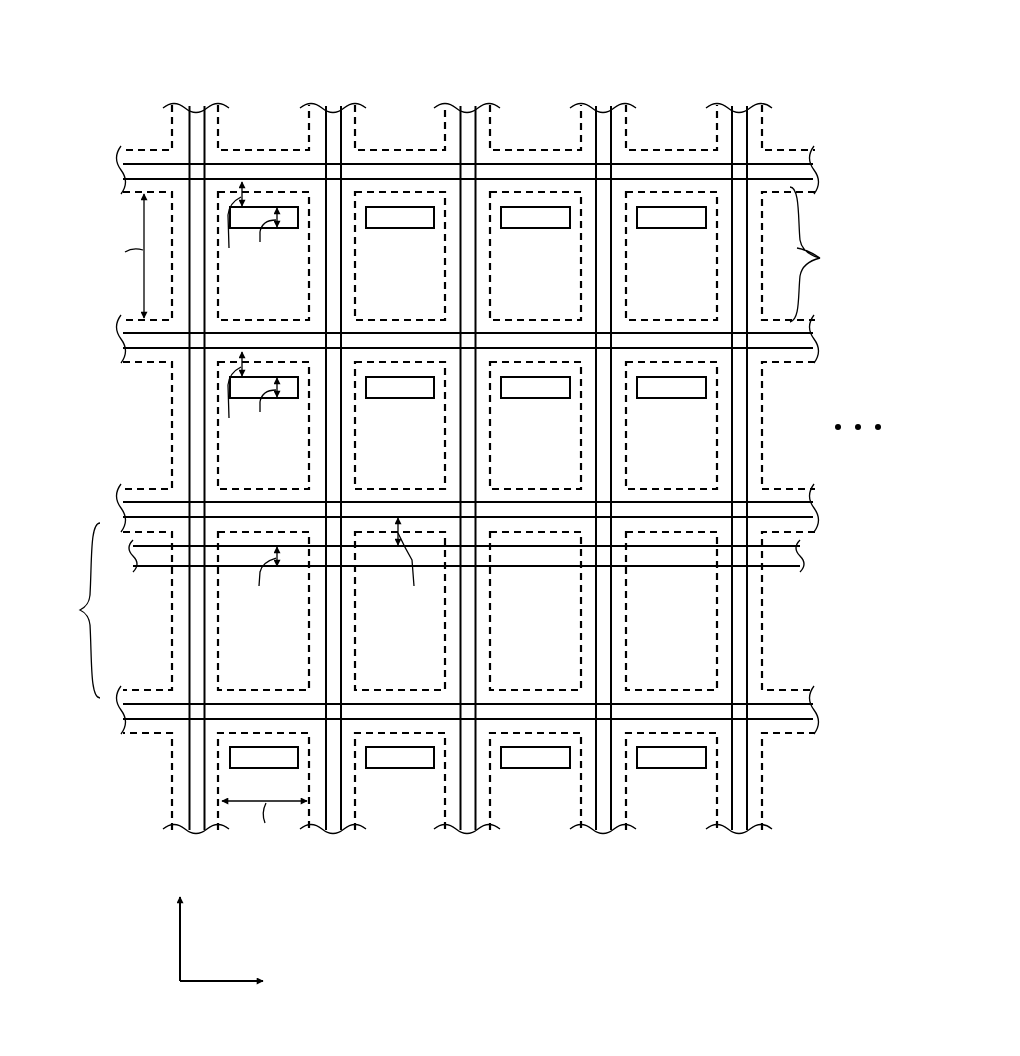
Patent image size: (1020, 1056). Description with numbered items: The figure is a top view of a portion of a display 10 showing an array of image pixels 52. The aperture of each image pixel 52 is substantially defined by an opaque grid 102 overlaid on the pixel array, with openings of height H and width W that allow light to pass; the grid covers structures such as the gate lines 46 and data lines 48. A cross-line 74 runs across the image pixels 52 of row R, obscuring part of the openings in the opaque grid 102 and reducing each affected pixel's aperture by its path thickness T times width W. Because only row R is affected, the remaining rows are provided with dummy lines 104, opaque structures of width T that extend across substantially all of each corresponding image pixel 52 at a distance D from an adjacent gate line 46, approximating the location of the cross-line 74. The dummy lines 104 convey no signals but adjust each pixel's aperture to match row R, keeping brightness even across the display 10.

The display 10 is at (791, 90).
The gate lines 46 is at (122, 169).
The data lines 48 is at (194, 111).
The image pixels 52 is at (469, 467).
The cross-line 74 is at (781, 568).
The opaque grid 102 is at (825, 254).
The dummy lines 104 is at (282, 229).